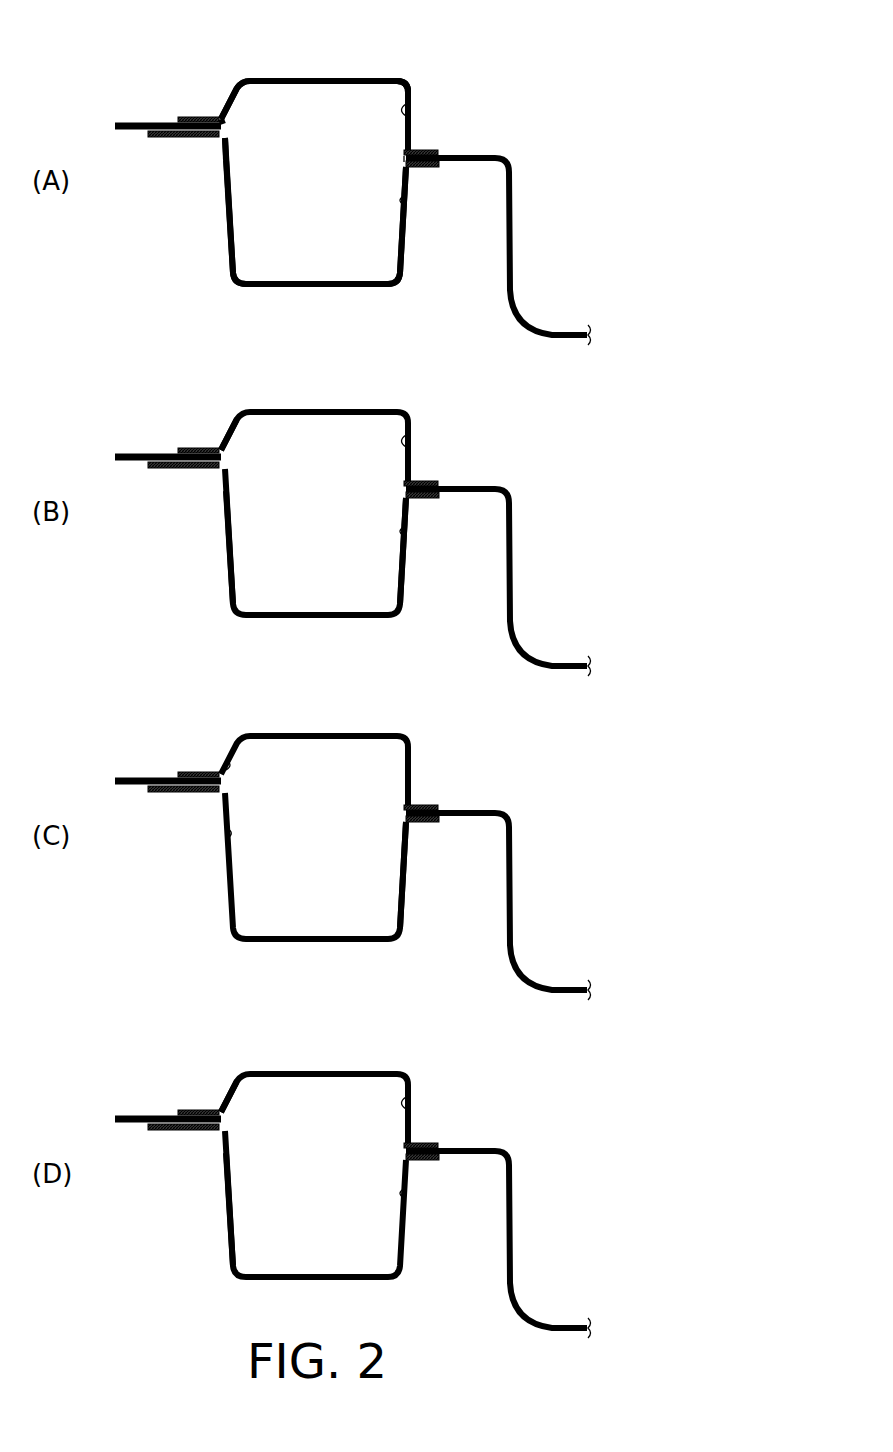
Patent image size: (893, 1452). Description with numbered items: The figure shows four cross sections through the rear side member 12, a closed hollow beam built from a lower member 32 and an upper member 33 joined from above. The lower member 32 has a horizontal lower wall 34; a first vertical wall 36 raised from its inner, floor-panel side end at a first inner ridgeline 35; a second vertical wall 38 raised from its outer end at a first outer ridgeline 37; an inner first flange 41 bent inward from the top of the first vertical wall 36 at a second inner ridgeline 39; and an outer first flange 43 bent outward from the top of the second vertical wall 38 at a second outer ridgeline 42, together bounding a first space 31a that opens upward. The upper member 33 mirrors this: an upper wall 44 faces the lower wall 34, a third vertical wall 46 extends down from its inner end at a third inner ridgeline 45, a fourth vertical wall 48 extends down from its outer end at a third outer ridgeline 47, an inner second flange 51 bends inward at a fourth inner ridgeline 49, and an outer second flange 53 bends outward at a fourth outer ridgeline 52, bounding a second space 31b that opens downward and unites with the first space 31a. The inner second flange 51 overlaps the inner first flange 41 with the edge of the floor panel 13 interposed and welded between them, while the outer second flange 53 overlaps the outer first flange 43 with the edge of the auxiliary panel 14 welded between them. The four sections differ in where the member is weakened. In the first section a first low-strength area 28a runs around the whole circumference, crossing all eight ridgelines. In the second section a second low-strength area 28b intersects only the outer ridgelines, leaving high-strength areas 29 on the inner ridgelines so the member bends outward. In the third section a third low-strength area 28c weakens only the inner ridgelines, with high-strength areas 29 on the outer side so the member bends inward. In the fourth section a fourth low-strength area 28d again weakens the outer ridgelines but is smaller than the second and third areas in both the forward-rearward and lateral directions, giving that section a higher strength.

The rear side member 12 is at (412, 62).
The floor panel 13 is at (514, 218).
The auxiliary panel 14 is at (148, 121).
The first low-strength area 28a is at (316, 78).
The second low-strength area 28b is at (237, 487).
The third low-strength area 28c is at (375, 837).
The fourth low-strength area 28d is at (238, 1149).
The high-strength area 29 is at (356, 480).
The first space 31a is at (407, 203).
The second space 31b is at (409, 112).
The lower member 32 is at (227, 240).
The upper member 33 is at (417, 97).
The lower wall 34 is at (335, 290).
The first inner ridgeline 35 is at (392, 285).
The first vertical wall 36 is at (405, 226).
The first outer ridgeline 37 is at (236, 281).
The second vertical wall 38 is at (224, 197).
The second inner ridgeline 39 is at (404, 163).
The inner first flange 41 is at (423, 168).
The second outer ridgeline 42 is at (230, 135).
The outer first flange 43 is at (189, 138).
The upper wall 44 is at (372, 79).
The third inner ridgeline 45 is at (406, 90).
The third vertical wall 46 is at (412, 136).
The third outer ridgeline 47 is at (238, 82).
The fourth vertical wall 48 is at (233, 104).
The fourth inner ridgeline 49 is at (404, 156).
The inner second flange 51 is at (438, 152).
The fourth outer ridgeline 52 is at (224, 124).
The outer second flange 53 is at (192, 116).